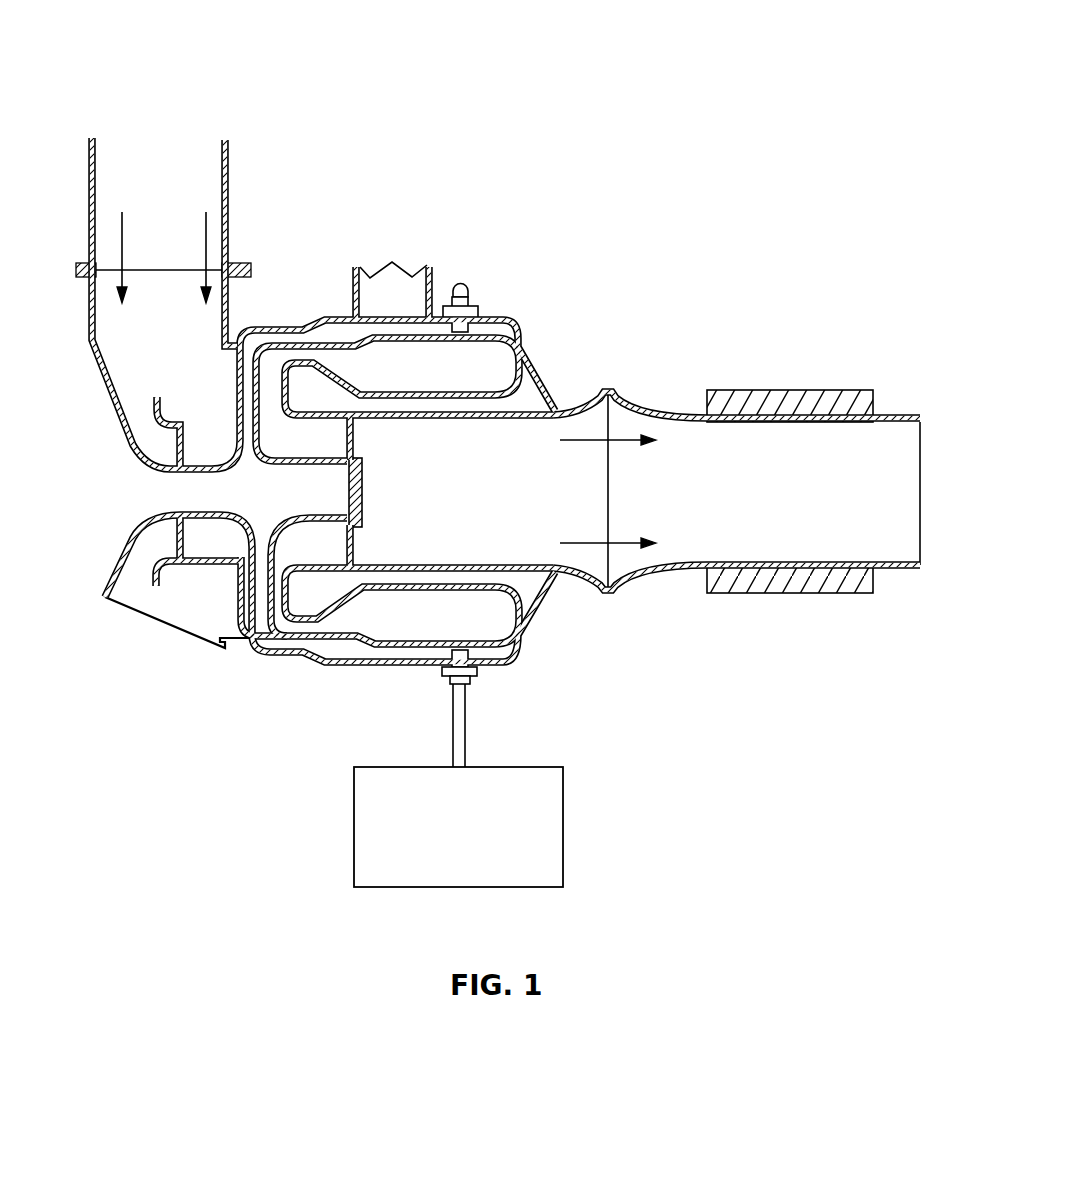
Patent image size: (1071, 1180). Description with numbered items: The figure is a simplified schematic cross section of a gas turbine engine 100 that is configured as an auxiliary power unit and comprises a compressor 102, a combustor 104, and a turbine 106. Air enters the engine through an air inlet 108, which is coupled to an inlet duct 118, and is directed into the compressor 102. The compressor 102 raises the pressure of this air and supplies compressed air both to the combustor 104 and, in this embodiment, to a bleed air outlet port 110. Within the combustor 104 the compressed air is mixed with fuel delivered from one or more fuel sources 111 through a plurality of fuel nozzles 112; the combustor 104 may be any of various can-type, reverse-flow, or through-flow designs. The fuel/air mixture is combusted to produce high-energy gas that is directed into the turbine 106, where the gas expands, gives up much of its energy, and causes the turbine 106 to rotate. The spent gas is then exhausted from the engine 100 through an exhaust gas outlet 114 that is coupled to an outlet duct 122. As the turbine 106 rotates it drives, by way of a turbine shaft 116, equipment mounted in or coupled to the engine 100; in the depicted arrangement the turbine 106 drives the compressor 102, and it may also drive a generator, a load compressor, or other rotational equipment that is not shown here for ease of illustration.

The gas turbine engine 100 is at (127, 60).
The compressor 102 is at (207, 449).
The combustor 104 is at (497, 364).
The turbine 106 is at (320, 443).
The air inlet 108 is at (182, 309).
The bleed air outlet port 110 is at (390, 290).
The fuel source 111 is at (425, 766).
The fuel nozzle 112 is at (480, 311).
The exhaust gas outlet 114 is at (585, 505).
The turbine shaft 116 is at (365, 485).
The inlet duct 118 is at (229, 180).
The outlet duct 122 is at (663, 408).